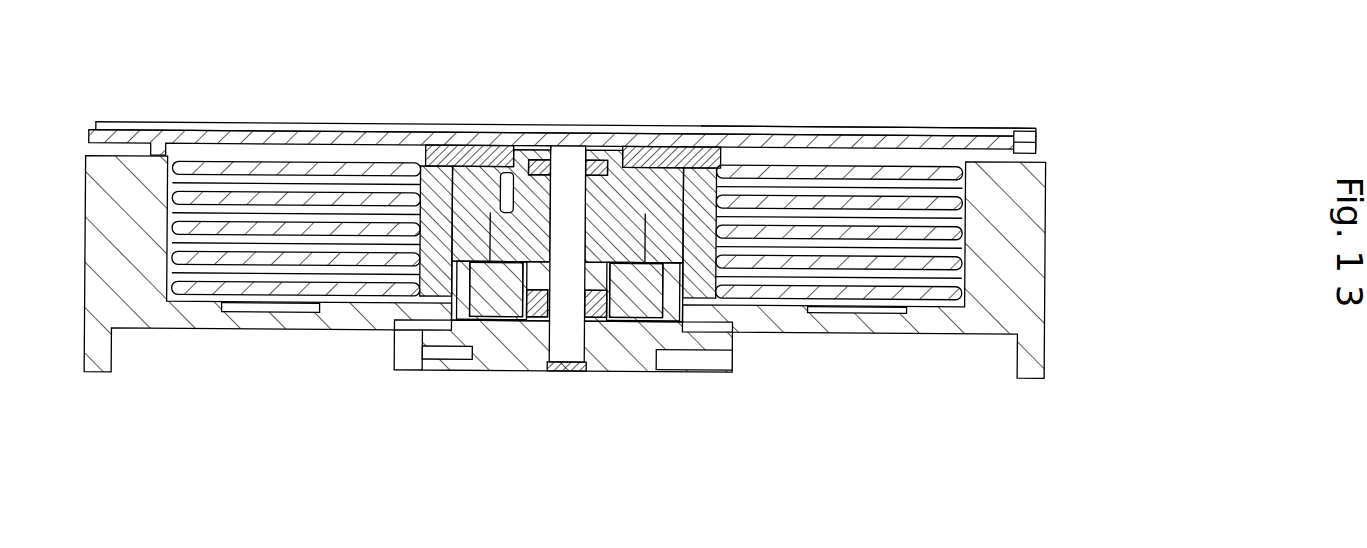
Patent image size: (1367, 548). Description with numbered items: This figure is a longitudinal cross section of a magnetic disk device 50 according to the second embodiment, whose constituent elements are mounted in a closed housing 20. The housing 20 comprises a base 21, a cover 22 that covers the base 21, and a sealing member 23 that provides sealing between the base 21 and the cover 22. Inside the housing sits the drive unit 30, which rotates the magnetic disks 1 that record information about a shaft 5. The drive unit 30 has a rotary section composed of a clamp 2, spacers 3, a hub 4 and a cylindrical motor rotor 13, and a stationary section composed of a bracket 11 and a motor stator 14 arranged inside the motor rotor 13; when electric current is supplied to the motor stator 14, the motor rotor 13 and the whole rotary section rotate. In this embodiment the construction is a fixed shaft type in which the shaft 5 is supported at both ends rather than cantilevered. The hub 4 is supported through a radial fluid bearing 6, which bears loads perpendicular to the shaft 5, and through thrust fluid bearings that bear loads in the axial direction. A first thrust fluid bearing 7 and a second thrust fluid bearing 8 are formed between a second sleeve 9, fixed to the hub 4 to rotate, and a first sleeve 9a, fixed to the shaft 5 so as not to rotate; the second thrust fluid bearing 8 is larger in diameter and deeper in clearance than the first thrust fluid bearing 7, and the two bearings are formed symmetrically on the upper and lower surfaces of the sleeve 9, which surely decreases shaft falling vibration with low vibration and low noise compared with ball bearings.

The magnetic disk 1 is at (232, 165).
The clamp 2 is at (700, 148).
The spacer 3 is at (417, 177).
The hub 4 is at (490, 213).
The shaft 5 is at (557, 142).
The radial fluid bearing 6 is at (505, 178).
The first thrust fluid bearing 7 is at (603, 165).
The second thrust fluid bearing 8 is at (655, 168).
The second sleeve 9 is at (540, 240).
The first sleeve 9a is at (545, 150).
The bracket 11 is at (673, 350).
The motor rotor 13 is at (462, 318).
The motor stator 14 is at (497, 316).
The housing 20 is at (1047, 238).
The base 21 is at (848, 320).
The cover 22 is at (902, 148).
The sealing member 23 is at (1005, 146).
The drive unit 30 is at (483, 380).
The magnetic disk device 50 is at (825, 113).